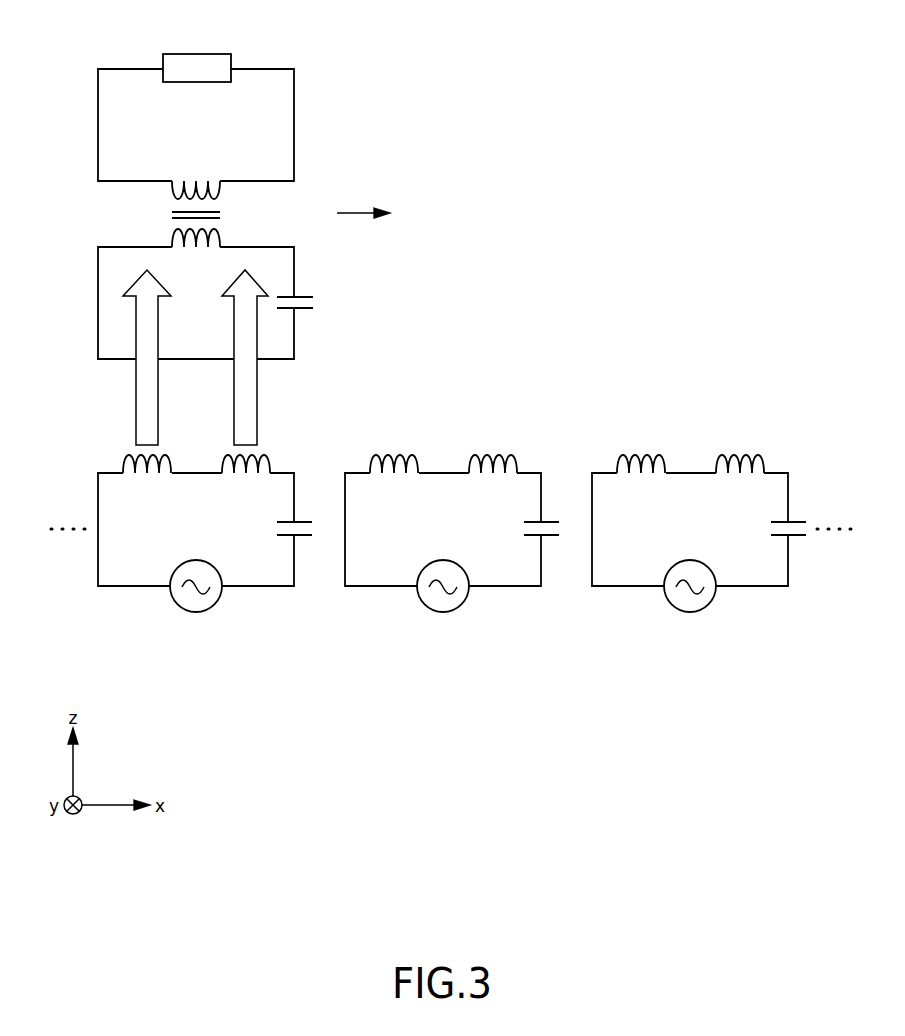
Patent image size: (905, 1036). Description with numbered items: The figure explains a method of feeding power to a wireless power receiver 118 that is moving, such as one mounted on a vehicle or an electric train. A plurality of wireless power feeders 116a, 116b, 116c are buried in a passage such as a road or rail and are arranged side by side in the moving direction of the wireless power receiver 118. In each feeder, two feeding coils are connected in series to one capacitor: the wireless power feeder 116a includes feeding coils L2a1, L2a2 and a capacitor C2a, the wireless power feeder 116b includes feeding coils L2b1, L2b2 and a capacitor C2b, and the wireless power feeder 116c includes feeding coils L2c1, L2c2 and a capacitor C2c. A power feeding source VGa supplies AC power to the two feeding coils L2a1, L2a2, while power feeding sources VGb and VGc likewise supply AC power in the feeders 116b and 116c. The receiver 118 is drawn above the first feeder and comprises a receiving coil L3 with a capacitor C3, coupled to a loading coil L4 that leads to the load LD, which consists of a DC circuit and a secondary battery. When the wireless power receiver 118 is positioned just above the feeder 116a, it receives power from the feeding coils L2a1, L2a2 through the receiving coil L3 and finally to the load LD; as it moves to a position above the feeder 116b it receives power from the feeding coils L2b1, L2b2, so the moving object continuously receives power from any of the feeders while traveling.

The wireless power receiver 118 is at (186, 227).
The wireless power feeder 116a is at (205, 581).
The wireless power feeder 116b is at (452, 581).
The wireless power feeder 116c is at (699, 581).
The load LD is at (197, 45).
The loading coil L4 is at (196, 177).
The receiving coil L3 is at (196, 251).
The capacitor C3 is at (311, 306).
The feeding coil L2a1 is at (147, 479).
The feeding coil L2a2 is at (246, 479).
The capacitor C2a is at (274, 530).
The power feeding source VGa is at (196, 600).
The feeding coil L2b1 is at (394, 479).
The feeding coil L2b2 is at (493, 479).
The capacitor C2b is at (521, 530).
The power feeding source VGb is at (443, 600).
The feeding coil L2c1 is at (641, 479).
The feeding coil L2c2 is at (740, 479).
The capacitor C2c is at (768, 530).
The power feeding source VGc is at (690, 600).